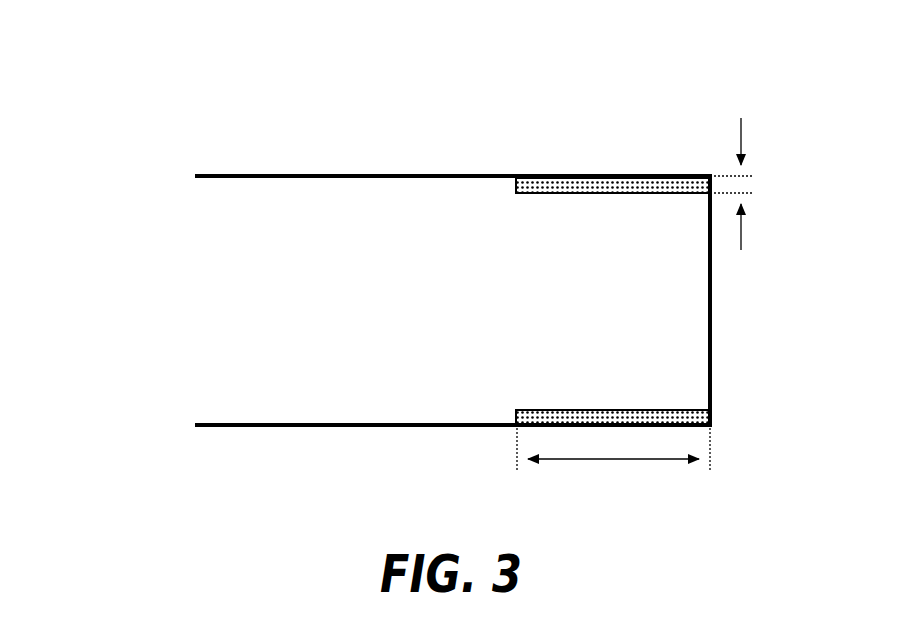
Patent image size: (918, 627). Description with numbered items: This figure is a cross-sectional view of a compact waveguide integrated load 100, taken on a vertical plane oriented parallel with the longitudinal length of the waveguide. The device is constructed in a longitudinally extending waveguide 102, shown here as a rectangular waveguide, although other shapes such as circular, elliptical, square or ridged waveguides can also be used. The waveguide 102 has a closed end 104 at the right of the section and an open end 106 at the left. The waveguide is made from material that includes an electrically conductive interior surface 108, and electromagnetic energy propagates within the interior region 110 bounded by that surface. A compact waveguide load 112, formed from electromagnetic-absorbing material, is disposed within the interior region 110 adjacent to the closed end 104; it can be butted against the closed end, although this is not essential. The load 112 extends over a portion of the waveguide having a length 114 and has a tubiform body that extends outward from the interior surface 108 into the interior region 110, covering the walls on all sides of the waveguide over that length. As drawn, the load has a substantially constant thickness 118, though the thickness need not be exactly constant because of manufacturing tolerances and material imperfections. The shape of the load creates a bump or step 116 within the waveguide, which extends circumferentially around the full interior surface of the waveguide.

The compact waveguide integrated load 100 is at (161, 99).
The waveguide 102 is at (265, 427).
The closed end 104 is at (711, 303).
The open end 106 is at (176, 323).
The electrically conductive interior surface 108 is at (242, 179).
The interior region 110 is at (448, 334).
The compact waveguide load 112 is at (645, 184).
The length 114 is at (603, 460).
The bump or step 116 is at (514, 184).
The thickness 118 is at (756, 184).